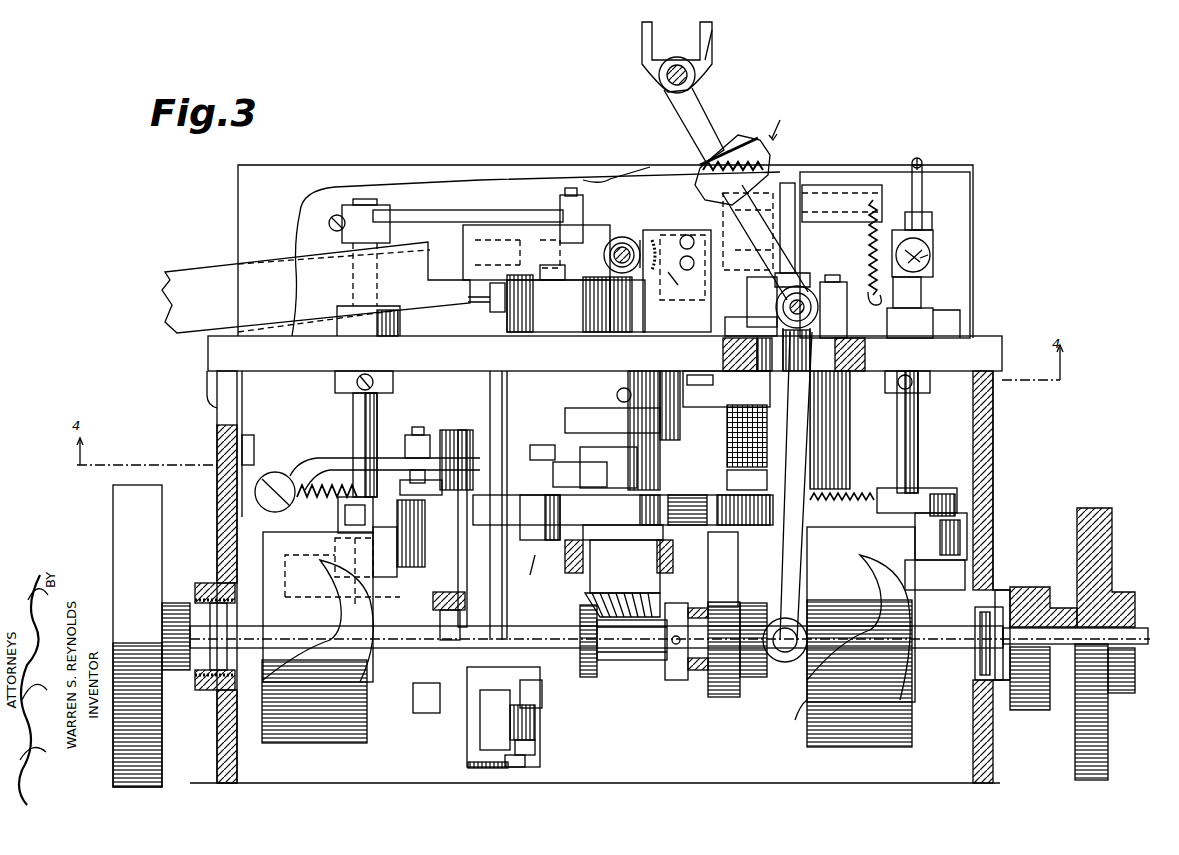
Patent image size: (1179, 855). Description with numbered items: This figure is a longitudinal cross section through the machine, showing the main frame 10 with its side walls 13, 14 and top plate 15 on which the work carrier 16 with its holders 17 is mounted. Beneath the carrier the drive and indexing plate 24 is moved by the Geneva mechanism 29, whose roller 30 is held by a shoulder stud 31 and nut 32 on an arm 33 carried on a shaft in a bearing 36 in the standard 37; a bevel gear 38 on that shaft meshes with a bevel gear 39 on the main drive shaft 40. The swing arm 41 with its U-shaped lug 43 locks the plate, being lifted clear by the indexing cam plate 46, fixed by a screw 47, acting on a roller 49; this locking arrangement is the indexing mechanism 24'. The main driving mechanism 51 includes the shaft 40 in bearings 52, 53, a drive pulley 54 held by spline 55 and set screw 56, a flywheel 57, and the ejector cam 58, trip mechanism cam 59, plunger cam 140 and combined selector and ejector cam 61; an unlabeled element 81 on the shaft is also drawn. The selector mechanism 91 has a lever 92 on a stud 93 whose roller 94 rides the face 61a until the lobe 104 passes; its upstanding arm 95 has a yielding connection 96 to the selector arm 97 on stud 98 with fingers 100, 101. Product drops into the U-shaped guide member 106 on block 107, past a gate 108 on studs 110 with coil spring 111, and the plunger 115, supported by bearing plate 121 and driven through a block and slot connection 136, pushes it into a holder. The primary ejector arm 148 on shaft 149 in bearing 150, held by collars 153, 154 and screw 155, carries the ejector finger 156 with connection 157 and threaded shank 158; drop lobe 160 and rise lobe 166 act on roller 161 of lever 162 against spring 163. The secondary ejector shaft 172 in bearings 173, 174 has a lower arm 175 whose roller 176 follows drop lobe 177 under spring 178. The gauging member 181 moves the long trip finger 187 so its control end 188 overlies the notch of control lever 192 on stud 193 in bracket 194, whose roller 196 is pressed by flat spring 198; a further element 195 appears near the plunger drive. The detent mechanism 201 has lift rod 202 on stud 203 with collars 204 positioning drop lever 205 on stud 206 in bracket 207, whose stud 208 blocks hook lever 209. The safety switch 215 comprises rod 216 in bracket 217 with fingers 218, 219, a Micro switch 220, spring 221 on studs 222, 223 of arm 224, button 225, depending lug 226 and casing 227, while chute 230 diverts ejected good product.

The main frame 10 is at (995, 430).
The side wall 13 is at (220, 496).
The side wall 14 is at (990, 478).
The top plate 15 is at (212, 355).
The work carrier 16 is at (475, 302).
The holders 17 is at (463, 240).
The drive and indexing plate 24 is at (623, 519).
The indexing mechanism 24' is at (844, 430).
The Geneva mechanism 29 is at (535, 560).
The roller 30 is at (530, 525).
The shoulder stud 31 is at (555, 528).
The nut 32 is at (528, 455).
The arm 33 is at (580, 474).
The bearing 36 is at (673, 556).
The standard 37 is at (572, 575).
The bevel gear 38 is at (655, 580).
The bevel gear 39 is at (572, 678).
The main drive shaft 40 is at (632, 660).
The swing arm 41 is at (752, 400).
The U-shaped lug 43 is at (740, 482).
The indexing cam plate 46 is at (575, 422).
The screw 47 is at (617, 395).
The roller 49 is at (727, 436).
The main driving mechanism 51 is at (1123, 568).
The bearing 52 is at (230, 620).
The bearing 53 is at (975, 670).
The drive pulley 54 is at (1080, 548).
The spline 55 is at (1120, 632).
The set screw 56 is at (1135, 680).
The flywheel 57 is at (125, 532).
The ejector cam 58 is at (315, 742).
The trip mechanism cam 59 is at (455, 597).
The combined selector and ejector cam 61 is at (855, 747).
The cam face 61a is at (807, 735).
The gear 81 is at (1035, 710).
The selector mechanism 91 is at (780, 119).
The lever 92 is at (805, 522).
The stud 93 is at (800, 286).
The roller 94 is at (784, 662).
The upstanding arm 95 is at (752, 203).
The yielding connection 96 is at (700, 162).
The selector arm 97 is at (698, 103).
The stud 98 is at (660, 75).
The finger 100 is at (642, 36).
The finger 101 is at (712, 35).
The lobe 104 is at (780, 548).
The U-shaped guide member 106 is at (585, 262).
The block 107 is at (705, 315).
The gate 108 is at (655, 238).
The studs 110 is at (695, 255).
The coil spring 111 is at (682, 286).
The plunger 115 is at (605, 250).
The bearing plate 121 is at (618, 238).
The block and slot connection 136 is at (692, 680).
The plunger cam 140 is at (720, 697).
The arm 148 is at (470, 215).
The shaft 149 is at (353, 414).
The bearing 150 is at (398, 322).
The collar 153 is at (335, 380).
The collar 154 is at (385, 210).
The screw 155 is at (333, 230).
The ejector finger 156 is at (548, 250).
The screw and nut connection 157 is at (560, 200).
The threaded shank 158 is at (570, 190).
The drop lobe 160 is at (275, 660).
The roller 161 is at (410, 560).
The lever 162 is at (338, 518).
The spring 163 is at (305, 492).
The rise lobe 166 is at (382, 580).
The shaft 172 is at (912, 433).
The bearing 173 is at (935, 318).
The bearing 174 is at (935, 580).
The lower arm 175 is at (960, 512).
The roller 176 is at (968, 538).
The drop lobe 177 is at (870, 676).
The spring 178 is at (865, 492).
The gauging member 181 is at (638, 238).
The long trip finger 187 is at (500, 380).
The control end 188 is at (542, 700).
The control lever 192 is at (525, 762).
The stud 193 is at (540, 748).
The bracket 194 is at (620, 332).
The gear 195 is at (590, 332).
The roller 196 is at (518, 275).
The flat spring 198 is at (488, 768).
The detent mechanism 201 is at (436, 420).
The lift rod 202 is at (488, 538).
The stud 203 is at (460, 748).
The collars 204 is at (480, 416).
The drop lever 205 is at (325, 458).
The stud 206 is at (258, 490).
The bracket 207 is at (240, 440).
The stud 208 is at (420, 430).
The hook lever 209 is at (428, 505).
The safety switch 215 is at (935, 270).
The rod 216 is at (788, 195).
The bracket 217 is at (855, 185).
The finger 218 is at (725, 220).
The finger 219 is at (795, 238).
The Micro switch 220 is at (928, 245).
The spring 221 is at (868, 250).
The stud 222 is at (930, 318).
The stud 223 is at (875, 200).
The arm 224 is at (922, 195).
The button 225 is at (925, 222).
The depending lug 226 is at (920, 165).
The casing 227 is at (390, 180).
The chute 230 is at (192, 270).